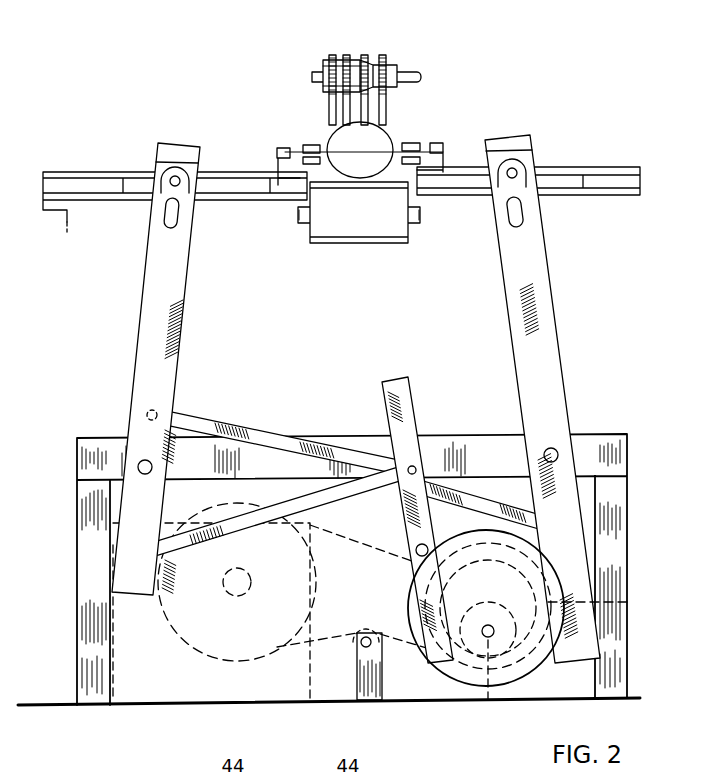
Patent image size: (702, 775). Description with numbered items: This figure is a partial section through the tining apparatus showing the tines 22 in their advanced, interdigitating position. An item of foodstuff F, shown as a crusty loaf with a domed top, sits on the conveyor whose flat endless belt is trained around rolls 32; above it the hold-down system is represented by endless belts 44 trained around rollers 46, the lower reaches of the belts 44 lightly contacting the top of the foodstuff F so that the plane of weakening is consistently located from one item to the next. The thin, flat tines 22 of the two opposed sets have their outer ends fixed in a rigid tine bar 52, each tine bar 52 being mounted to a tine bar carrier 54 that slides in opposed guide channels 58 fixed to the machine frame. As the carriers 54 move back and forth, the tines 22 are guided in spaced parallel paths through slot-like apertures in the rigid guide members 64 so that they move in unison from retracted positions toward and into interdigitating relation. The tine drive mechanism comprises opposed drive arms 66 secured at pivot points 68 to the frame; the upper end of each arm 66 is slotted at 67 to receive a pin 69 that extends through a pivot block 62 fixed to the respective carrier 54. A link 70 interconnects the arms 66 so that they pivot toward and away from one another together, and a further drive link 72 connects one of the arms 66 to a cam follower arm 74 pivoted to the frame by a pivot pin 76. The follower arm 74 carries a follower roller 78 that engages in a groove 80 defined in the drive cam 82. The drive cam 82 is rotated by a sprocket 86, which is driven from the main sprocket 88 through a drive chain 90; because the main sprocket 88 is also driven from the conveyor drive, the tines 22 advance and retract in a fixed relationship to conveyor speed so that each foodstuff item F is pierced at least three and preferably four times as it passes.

The tines 22 is at (303, 150).
The rolls 32 is at (410, 236).
The endless belts 44 is at (347, 60).
The rollers 46 is at (330, 62).
The tine bar 52 is at (280, 150).
The tine bar carrier 54 is at (539, 150).
The guide channels 58 is at (68, 172).
The pivot blocks 62 is at (172, 168).
The guide members 64 is at (414, 145).
The drive arms 66 is at (182, 338).
The slot 67 is at (522, 214).
The pivot points 68 is at (557, 451).
The pins 69 is at (170, 189).
The link 70 is at (212, 429).
The drive link 72 is at (342, 492).
The cam follower arm 74 is at (406, 422).
The pivot pin 76 is at (416, 548).
The follower roller 78 is at (436, 606).
The groove 80 is at (632, 602).
The drive cam 82 is at (546, 684).
The sprocket 86 is at (489, 700).
The main sprocket 88 is at (230, 690).
The drive chain 90 is at (392, 567).
The foodstuff F is at (378, 138).